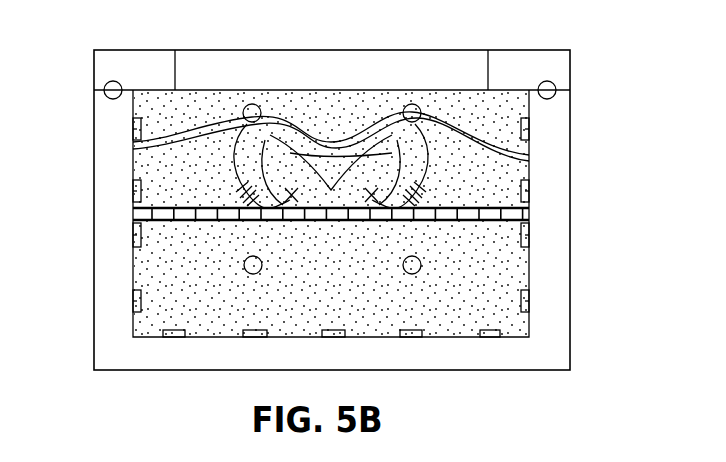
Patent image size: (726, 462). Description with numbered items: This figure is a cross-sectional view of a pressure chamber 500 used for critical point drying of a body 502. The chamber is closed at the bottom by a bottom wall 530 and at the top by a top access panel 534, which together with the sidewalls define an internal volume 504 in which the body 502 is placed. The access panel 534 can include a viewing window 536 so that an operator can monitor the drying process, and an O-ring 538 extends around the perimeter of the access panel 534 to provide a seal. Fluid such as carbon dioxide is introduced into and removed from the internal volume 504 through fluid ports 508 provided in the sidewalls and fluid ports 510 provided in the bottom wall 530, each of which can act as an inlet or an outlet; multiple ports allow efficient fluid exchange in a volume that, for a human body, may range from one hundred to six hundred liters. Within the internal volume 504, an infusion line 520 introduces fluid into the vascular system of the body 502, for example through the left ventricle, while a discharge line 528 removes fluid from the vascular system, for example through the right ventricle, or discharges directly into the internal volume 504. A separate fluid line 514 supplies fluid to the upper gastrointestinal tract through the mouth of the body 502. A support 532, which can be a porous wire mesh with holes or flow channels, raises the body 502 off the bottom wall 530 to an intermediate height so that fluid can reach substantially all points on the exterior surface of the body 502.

The pressure chamber 500 is at (108, 332).
The body 502 is at (410, 162).
The internal volume 504 is at (360, 300).
The fluid ports 508 is at (135, 300).
The fluid ports 510 is at (176, 338).
The fluid line 514 is at (320, 137).
The infusion line 520 is at (133, 151).
The discharge line 528 is at (443, 113).
The bottom wall 530 is at (450, 338).
The support 532 is at (190, 206).
The top access panel 534 is at (123, 55).
The viewing window 536 is at (334, 64).
The O-ring 538 is at (554, 84).